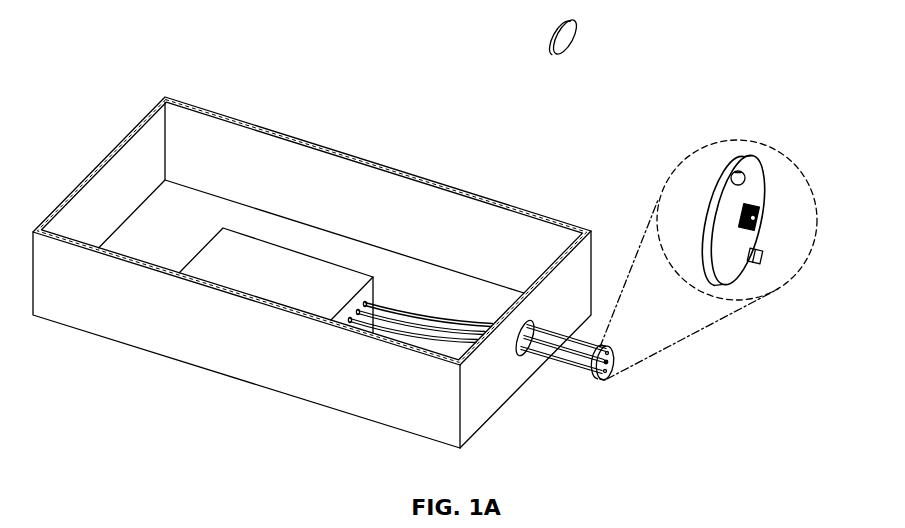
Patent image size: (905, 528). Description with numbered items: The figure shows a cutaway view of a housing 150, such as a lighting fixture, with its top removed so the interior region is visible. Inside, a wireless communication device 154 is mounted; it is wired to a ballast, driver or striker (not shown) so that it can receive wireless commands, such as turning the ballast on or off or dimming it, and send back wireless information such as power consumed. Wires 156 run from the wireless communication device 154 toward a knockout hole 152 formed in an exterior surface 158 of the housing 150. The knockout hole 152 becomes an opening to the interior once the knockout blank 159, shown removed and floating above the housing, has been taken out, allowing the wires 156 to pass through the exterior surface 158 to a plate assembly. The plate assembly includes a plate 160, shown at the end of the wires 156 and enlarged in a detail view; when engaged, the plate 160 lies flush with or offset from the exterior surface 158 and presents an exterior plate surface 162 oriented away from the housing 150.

The housing 150 is at (373, 162).
The knockout hole 152 is at (518, 355).
The wireless communication device 154 is at (247, 235).
The wires 156 is at (412, 310).
The exterior surface 158 is at (578, 277).
The knockout blank 159 is at (558, 57).
The plate 160 is at (601, 380).
The exterior plate surface 162 is at (748, 237).